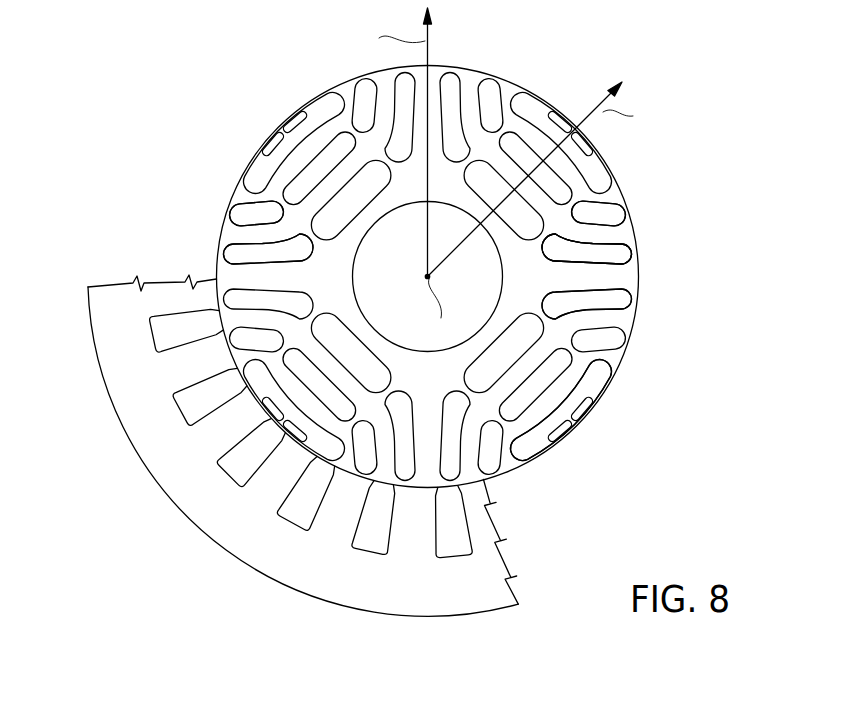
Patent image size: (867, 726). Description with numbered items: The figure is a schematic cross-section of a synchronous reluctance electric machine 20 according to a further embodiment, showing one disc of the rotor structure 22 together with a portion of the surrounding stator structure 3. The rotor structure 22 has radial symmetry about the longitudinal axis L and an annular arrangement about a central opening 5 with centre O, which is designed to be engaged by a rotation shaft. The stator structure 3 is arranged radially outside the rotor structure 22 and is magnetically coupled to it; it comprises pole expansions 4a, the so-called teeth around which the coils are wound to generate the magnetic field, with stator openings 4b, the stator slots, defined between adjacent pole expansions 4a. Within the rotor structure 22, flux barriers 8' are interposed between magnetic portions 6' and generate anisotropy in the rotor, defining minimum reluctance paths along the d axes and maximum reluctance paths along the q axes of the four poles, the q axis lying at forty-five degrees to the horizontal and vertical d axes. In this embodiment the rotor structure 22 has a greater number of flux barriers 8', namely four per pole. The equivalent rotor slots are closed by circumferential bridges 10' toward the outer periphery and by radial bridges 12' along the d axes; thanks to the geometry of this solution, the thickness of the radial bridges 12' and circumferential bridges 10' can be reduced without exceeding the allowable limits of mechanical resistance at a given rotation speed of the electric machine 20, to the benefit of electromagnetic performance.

The electric machine 20 is at (131, 103).
The rotor structure 22 is at (428, 277).
The central opening 5 is at (428, 277).
The magnetic portions 6' is at (623, 223).
The flux barriers 8' is at (620, 276).
The circumferential bridges 10' is at (564, 425).
The radial bridges 12' is at (244, 229).
The stator structure 3 is at (269, 591).
The pole expansions 4a is at (411, 528).
The stator openings 4b is at (382, 533).